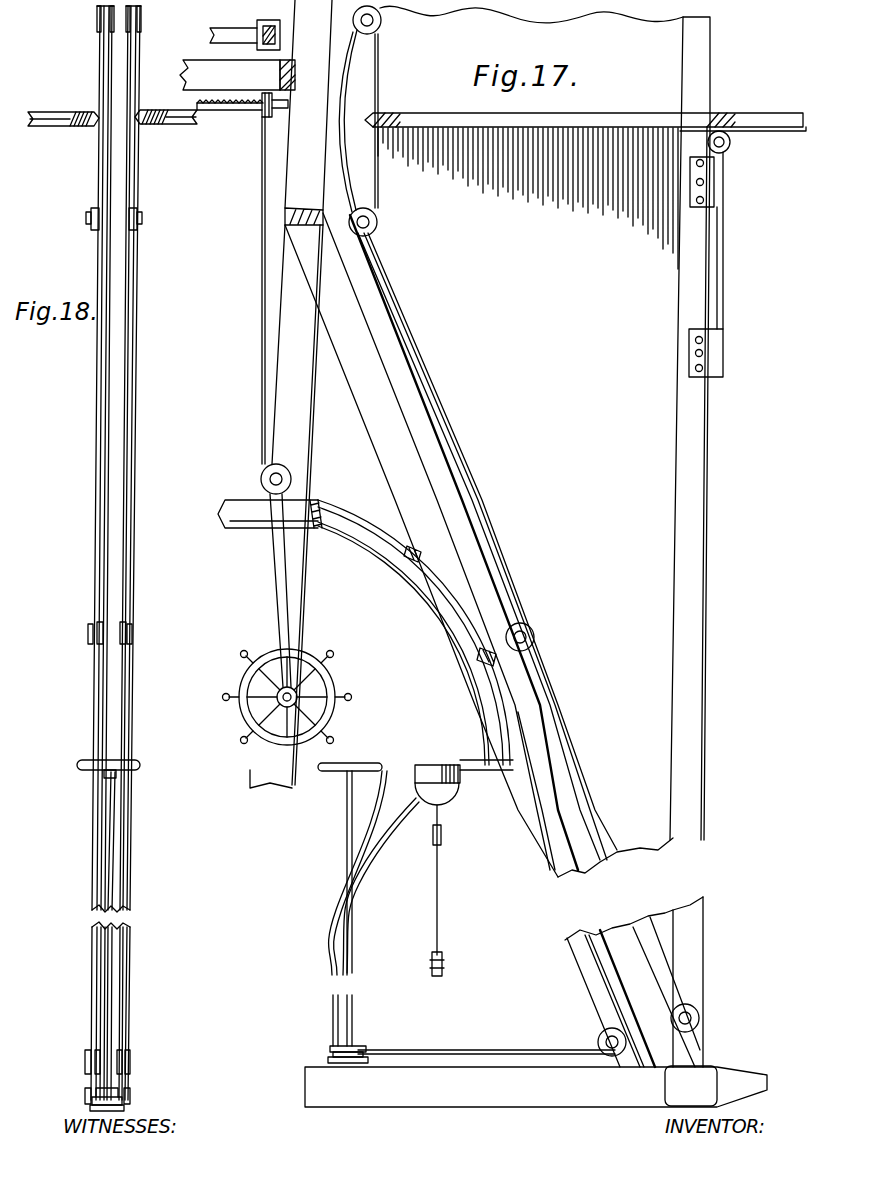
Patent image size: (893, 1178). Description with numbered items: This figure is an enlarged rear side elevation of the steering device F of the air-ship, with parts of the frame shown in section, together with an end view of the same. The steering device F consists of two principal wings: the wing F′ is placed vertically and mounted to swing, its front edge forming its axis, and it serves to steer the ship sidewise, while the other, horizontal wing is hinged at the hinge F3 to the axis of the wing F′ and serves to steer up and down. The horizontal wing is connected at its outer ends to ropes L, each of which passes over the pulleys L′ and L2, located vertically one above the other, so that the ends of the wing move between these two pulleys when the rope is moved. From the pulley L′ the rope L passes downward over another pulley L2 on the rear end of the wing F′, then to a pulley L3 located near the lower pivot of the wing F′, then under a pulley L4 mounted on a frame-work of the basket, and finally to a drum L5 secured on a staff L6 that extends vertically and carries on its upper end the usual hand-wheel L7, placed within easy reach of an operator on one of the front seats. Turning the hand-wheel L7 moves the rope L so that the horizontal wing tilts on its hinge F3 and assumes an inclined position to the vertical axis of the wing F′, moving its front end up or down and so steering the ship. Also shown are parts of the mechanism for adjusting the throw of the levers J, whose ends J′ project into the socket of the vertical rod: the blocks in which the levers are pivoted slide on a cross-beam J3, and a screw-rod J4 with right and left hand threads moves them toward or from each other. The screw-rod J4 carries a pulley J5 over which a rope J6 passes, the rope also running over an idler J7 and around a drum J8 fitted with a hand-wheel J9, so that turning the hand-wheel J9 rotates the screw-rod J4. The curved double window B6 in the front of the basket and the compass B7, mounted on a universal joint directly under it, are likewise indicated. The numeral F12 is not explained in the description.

In FIG. 18, the rope L is at (96, 170).
In FIG. 17, the rope L is at (370, 190).
In FIG. 18, the pulley L′ is at (95, 18).
In FIG. 17, the pulley L′ is at (381, 22).
In FIG. 18, the pulley L2 is at (88, 232).
In FIG. 17, the pulley L2 is at (378, 222).
In FIG. 18, the pulley L3 is at (85, 1062).
In FIG. 17, the pulley L3 is at (700, 1018).
In FIG. 18, the pulley L4 is at (131, 1097).
In FIG. 17, the pulley L4 is at (598, 1042).
In FIG. 18, the drum L5 is at (90, 1110).
In FIG. 17, the drum L5 is at (360, 1048).
In FIG. 18, the staff L6 is at (112, 856).
In FIG. 17, the staff L6 is at (345, 836).
In FIG. 18, the hand-wheel L7 is at (142, 766).
In FIG. 17, the hand-wheel L7 is at (350, 763).
In FIG. 17, the steering device F is at (724, 354).
In FIG. 18, the wing F′ is at (122, 430).
In FIG. 17, the wing F′ is at (655, 572).
In FIG. 18, the horizontal bar F12 is at (62, 130).
In FIG. 17, the horizontal bar F12 is at (618, 112).
In FIG. 17, the hinge F3 is at (730, 150).
In FIG. 17, the lever J is at (233, 26).
In FIG. 17, the lever end J′ is at (271, 24).
In FIG. 17, the cross-beam J3 is at (237, 75).
In FIG. 17, the screw-rod J4 is at (244, 114).
In FIG. 17, the pulley J5 is at (274, 117).
In FIG. 17, the rope J6 is at (262, 230).
In FIG. 17, the idler J7 is at (282, 464).
In FIG. 17, the drum J8 is at (300, 688).
In FIG. 17, the hand-wheel J9 is at (248, 681).
In FIG. 17, the curved double window B6 is at (460, 598).
In FIG. 17, the compass B7 is at (452, 795).